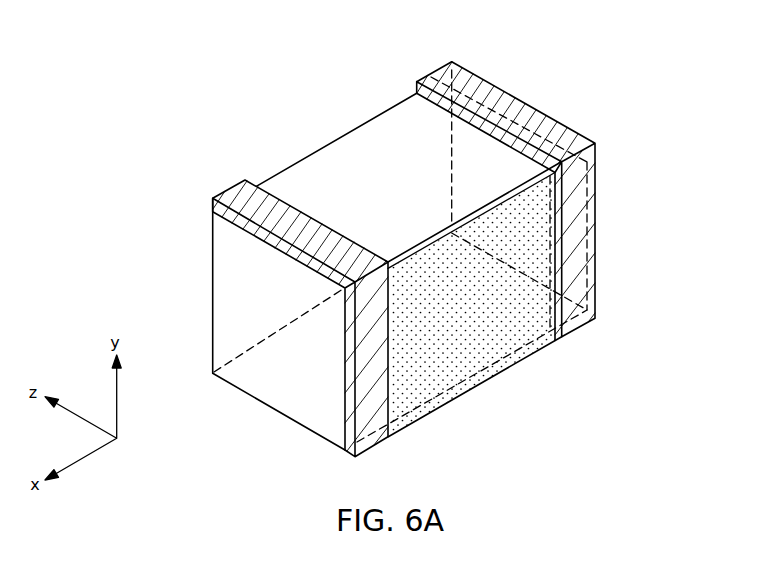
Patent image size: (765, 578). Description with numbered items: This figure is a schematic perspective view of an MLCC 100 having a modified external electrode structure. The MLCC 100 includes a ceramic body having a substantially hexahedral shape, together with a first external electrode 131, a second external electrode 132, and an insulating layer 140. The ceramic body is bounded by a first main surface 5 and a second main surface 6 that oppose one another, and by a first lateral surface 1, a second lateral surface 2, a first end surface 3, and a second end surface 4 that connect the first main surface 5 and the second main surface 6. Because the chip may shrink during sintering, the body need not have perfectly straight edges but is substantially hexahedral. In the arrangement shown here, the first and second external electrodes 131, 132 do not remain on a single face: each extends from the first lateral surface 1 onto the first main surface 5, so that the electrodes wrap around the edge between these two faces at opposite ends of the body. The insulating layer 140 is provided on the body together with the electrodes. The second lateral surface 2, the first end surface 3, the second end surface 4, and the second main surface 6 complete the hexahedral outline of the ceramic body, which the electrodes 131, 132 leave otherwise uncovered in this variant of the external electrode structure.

The MLCC 100 is at (199, 85).
The first external electrode 131 is at (225, 200).
The second external electrode 132 is at (442, 84).
The insulating layer 140 is at (530, 240).
The first lateral surface 1 is at (466, 301).
The second lateral surface 2 is at (355, 201).
The first end surface 3 is at (284, 338).
The second end surface 4 is at (481, 168).
The first main surface 5 is at (397, 182).
The second main surface 6 is at (435, 342).